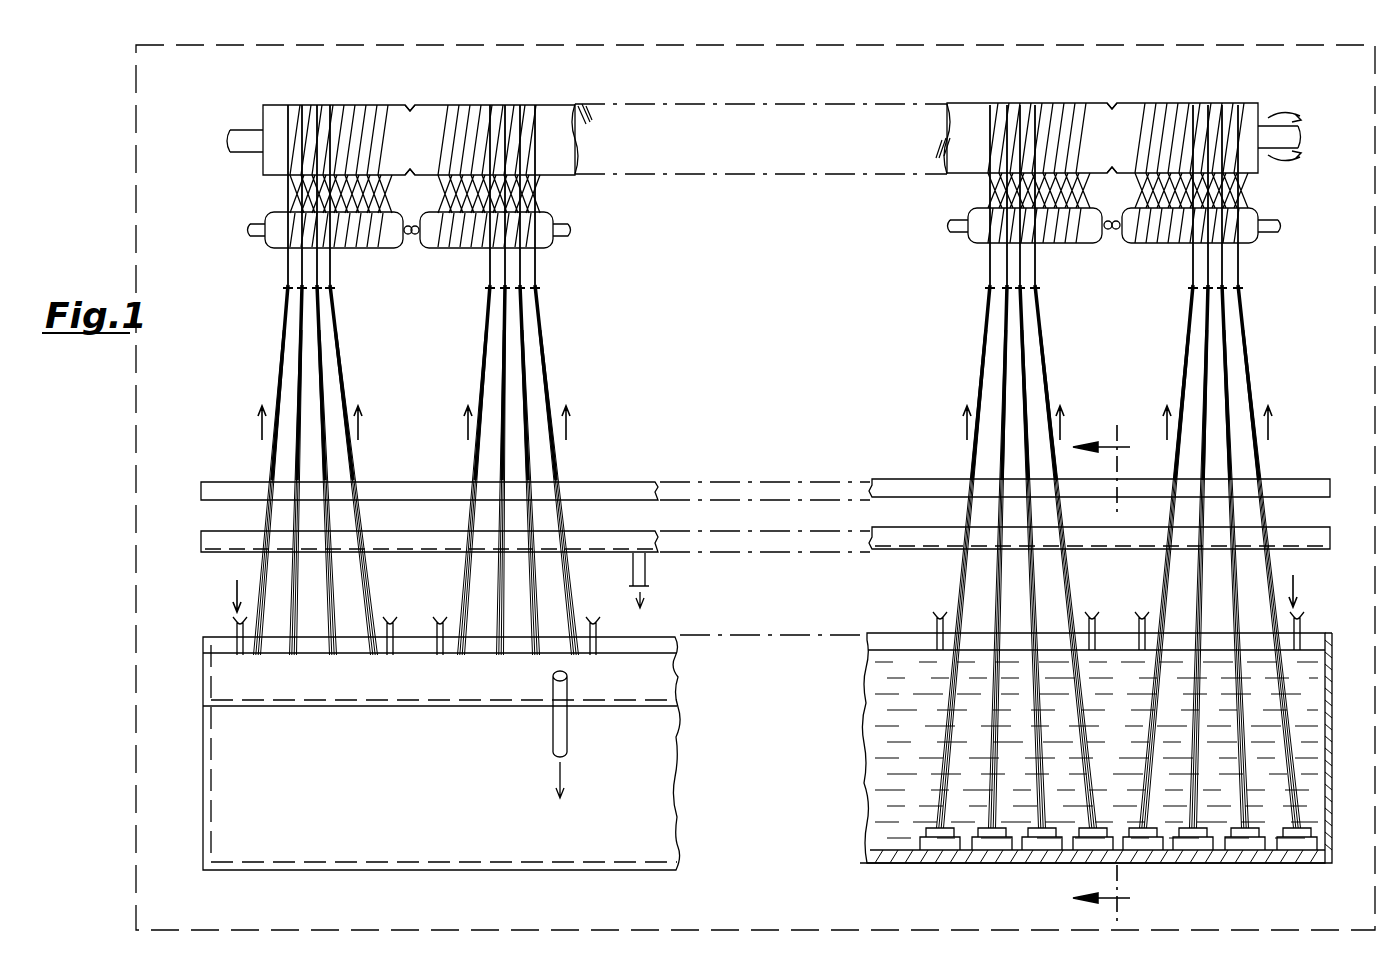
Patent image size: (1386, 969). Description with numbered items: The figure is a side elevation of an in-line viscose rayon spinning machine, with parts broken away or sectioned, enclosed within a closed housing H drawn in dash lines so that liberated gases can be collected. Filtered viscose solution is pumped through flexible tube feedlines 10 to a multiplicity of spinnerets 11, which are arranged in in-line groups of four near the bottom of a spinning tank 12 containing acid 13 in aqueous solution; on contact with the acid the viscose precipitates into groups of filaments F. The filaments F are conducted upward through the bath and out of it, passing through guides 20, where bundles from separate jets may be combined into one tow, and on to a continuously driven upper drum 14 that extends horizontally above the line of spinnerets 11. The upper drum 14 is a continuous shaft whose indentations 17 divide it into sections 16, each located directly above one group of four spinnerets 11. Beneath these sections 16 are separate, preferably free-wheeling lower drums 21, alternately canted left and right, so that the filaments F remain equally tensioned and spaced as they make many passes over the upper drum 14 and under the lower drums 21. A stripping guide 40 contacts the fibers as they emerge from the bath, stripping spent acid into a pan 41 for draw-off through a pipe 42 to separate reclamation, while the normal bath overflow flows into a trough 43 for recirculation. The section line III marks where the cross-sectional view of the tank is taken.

The flexible tube feedlines 10 is at (235, 628).
The spinnerets 11 is at (950, 848).
The spinning tank 12 is at (252, 765).
The acid 13 is at (892, 714).
The upper drum 14 is at (947, 96).
The sections 16 is at (563, 100).
The indentations 17 is at (1113, 102).
The guides 20 is at (522, 288).
The lower drums 21 is at (395, 250).
The stripping guide 40 is at (633, 490).
The pan 41 is at (920, 540).
The pipe 42 is at (645, 568).
The trough 43 is at (235, 682).
The filaments F is at (522, 374).
The closed housing H is at (138, 562).
The section line III is at (1111, 673).